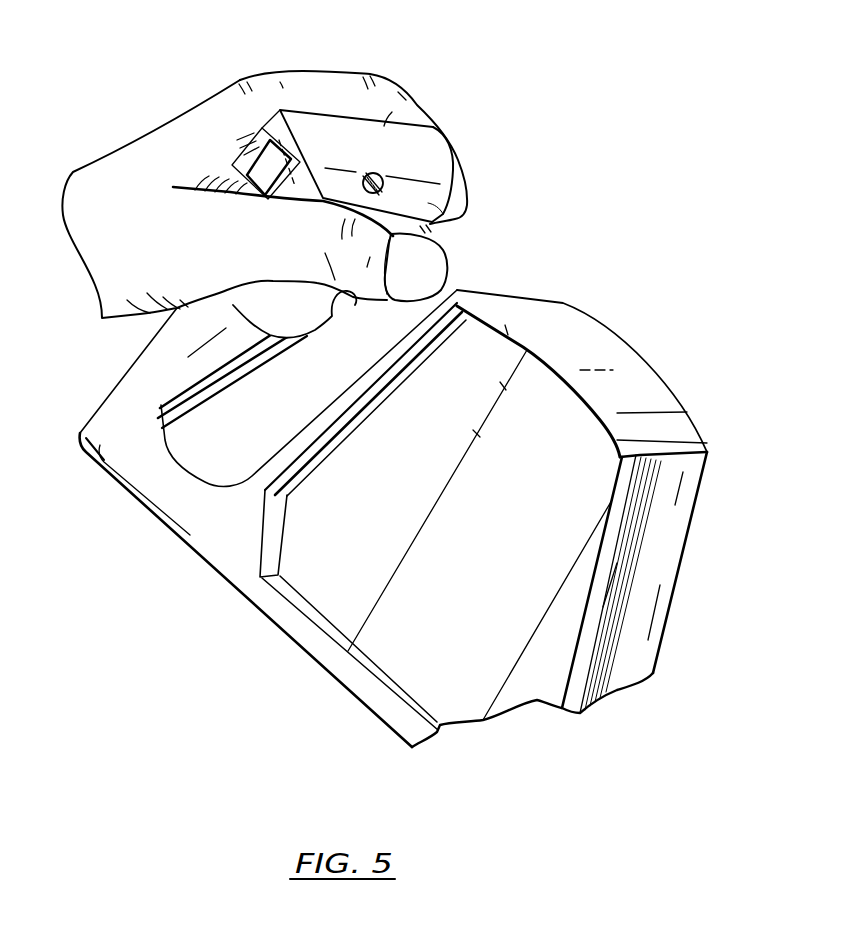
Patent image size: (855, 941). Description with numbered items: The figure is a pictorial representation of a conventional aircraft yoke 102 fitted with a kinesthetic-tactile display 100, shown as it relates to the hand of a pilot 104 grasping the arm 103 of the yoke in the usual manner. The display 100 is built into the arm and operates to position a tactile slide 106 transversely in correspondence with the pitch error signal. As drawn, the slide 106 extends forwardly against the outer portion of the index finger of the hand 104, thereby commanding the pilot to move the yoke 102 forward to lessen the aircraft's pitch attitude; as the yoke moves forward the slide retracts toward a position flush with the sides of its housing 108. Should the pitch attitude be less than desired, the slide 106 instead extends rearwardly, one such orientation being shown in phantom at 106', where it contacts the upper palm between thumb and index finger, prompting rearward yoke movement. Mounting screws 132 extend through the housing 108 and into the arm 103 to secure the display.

The kinesthetic-tactile display 100 is at (478, 121).
The aircraft yoke 102 is at (607, 357).
The arm of yoke 103 is at (250, 332).
The hand of a pilot 104 is at (120, 180).
The tactile slide 106 is at (483, 174).
The rearward orientation of slide 106' is at (223, 137).
The housing 108 is at (350, 133).
The mounting screws 132 is at (376, 172).